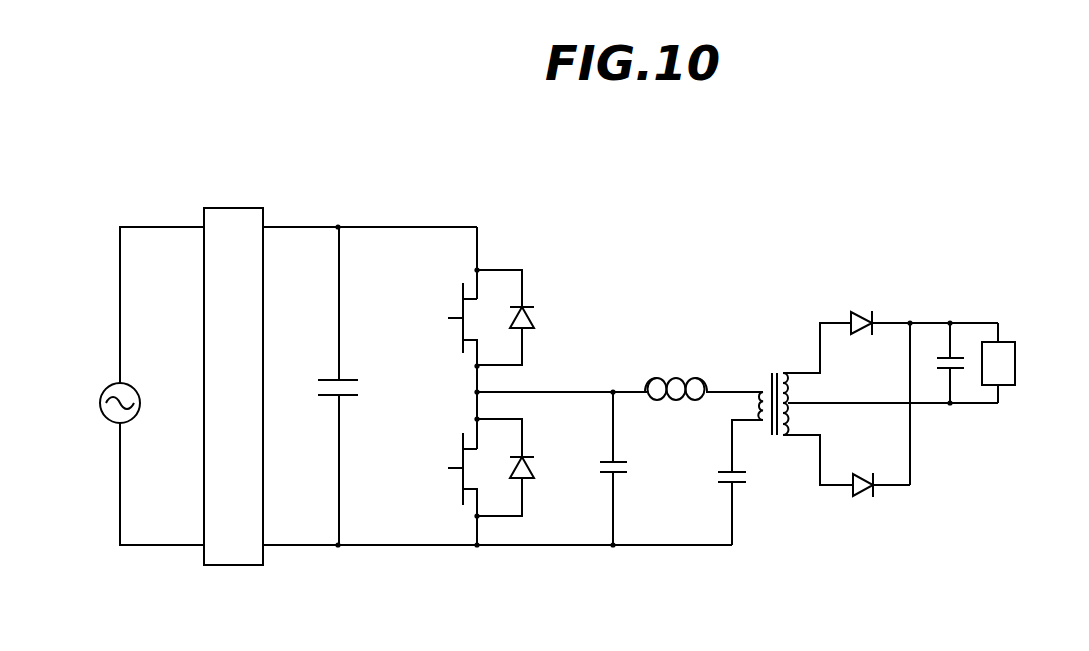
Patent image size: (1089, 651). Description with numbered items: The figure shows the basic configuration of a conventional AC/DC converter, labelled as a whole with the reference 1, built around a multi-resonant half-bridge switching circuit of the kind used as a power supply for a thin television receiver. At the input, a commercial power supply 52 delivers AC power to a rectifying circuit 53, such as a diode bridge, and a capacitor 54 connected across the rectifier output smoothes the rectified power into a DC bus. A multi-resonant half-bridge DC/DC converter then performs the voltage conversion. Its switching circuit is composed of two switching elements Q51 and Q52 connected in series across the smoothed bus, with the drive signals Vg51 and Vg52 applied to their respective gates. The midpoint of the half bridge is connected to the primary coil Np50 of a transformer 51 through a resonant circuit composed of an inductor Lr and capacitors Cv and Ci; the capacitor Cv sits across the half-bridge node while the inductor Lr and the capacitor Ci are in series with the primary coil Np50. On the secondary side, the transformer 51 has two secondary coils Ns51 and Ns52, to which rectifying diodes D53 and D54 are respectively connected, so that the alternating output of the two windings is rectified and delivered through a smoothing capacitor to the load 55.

The switching power supply circuit 1 is at (680, 210).
The transformer 51 is at (785, 477).
The commercial power supply 52 is at (108, 388).
The rectifying circuit 53 is at (243, 208).
The capacitor 54 is at (333, 380).
The load 55 is at (1015, 365).
The switching element Q51 is at (474, 309).
The switching element Q52 is at (474, 468).
The gate drive signal of Q51 Vg51 is at (421, 321).
The gate drive signal of Q52 Vg52 is at (421, 471).
The capacitor Cv is at (596, 468).
The inductor Lr is at (704, 406).
The capacitor Ci is at (715, 504).
The primary coil Np50 is at (730, 414).
The secondary coil Ns51 is at (806, 363).
The secondary coil Ns52 is at (875, 444).
The rectifying diode D53 is at (920, 384).
The rectifying diode D54 is at (877, 503).